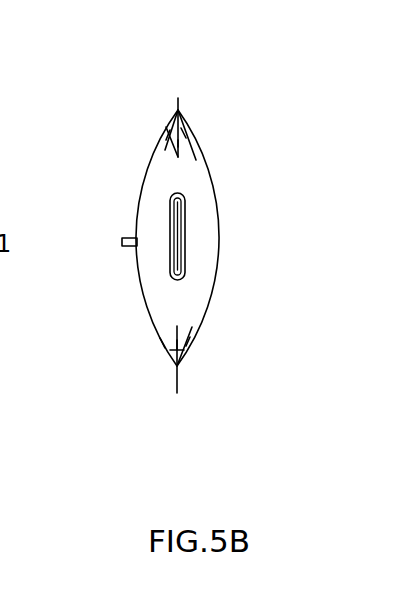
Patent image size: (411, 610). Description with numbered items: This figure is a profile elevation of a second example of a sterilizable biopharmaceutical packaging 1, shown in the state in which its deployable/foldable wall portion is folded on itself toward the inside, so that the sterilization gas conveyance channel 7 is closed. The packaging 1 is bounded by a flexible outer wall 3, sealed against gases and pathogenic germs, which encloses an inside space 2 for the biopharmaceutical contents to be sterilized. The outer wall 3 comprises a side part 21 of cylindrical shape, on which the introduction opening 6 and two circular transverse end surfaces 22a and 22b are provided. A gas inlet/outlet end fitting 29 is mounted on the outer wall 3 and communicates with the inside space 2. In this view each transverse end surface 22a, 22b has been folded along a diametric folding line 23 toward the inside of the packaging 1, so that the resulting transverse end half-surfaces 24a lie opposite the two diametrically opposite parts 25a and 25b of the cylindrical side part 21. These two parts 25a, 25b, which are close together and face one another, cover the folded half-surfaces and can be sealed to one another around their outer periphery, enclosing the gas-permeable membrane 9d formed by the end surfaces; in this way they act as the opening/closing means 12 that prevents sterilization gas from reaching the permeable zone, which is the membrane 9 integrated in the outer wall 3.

The sterilizable biopharmaceutical packaging 1 is at (222, 188).
The inside space 2 is at (186, 246).
The outer wall 3 is at (205, 313).
The introduction opening 6 is at (186, 222).
The sterilization gas conveyance channel 7 is at (186, 121).
The membrane 9 is at (178, 127).
The membrane 9d is at (190, 351).
The opening/closing means 12 is at (177, 142).
The side part 21 is at (205, 270).
The transverse end surface 22a is at (180, 143).
The transverse end surface 22b is at (190, 347).
The diametric folding line 23 is at (182, 120).
The transverse end half-surface 24a is at (177, 352).
The part of the cylindrical side part 25a is at (170, 130).
The part of the cylindrical side part 25b is at (183, 128).
The gas inlet/outlet end fitting 29 is at (125, 242).